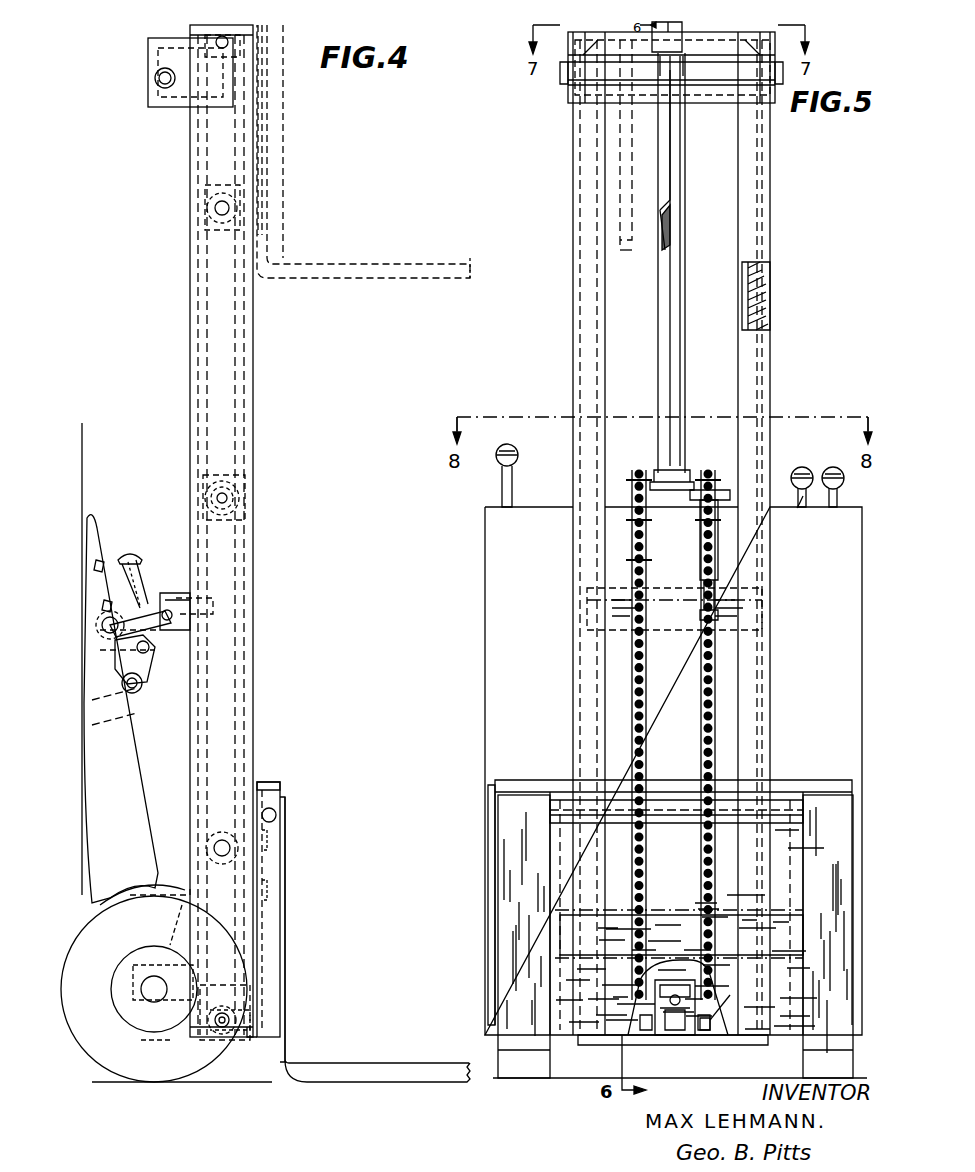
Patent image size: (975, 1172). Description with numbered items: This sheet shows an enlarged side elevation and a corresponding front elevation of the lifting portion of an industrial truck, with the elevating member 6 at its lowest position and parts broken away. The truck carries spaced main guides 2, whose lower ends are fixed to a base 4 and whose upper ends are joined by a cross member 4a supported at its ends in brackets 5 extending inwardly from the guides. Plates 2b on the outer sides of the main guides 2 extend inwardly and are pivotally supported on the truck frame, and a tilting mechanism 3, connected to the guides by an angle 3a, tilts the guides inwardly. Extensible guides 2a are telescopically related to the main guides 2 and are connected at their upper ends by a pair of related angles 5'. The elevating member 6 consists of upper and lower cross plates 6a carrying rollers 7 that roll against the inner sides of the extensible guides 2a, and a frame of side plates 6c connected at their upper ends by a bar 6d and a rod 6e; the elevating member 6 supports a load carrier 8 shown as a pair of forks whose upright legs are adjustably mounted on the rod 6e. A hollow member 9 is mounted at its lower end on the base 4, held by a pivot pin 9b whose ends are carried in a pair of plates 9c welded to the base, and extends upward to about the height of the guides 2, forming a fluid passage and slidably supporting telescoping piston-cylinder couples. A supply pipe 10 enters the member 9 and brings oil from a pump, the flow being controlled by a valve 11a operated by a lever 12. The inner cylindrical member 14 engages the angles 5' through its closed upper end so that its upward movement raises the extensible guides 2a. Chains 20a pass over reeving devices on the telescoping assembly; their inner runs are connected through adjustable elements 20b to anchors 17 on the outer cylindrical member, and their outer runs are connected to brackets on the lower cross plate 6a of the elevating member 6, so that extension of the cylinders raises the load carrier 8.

In FIG. 4, the main guides 2 is at (234, 690).
In FIG. 5, the main guides 2 is at (746, 188).
In FIG. 5, the extensible guides 2a is at (742, 297).
In FIG. 4, the plates 2b is at (185, 895).
In FIG. 5, the plates 2b is at (806, 930).
In FIG. 4, the tilting mechanism 3 is at (140, 660).
In FIG. 4, the angle 3a is at (172, 594).
In FIG. 5, the angle 3a is at (750, 649).
In FIG. 4, the base 4 is at (230, 1038).
In FIG. 5, the base 4 is at (596, 1042).
In FIG. 4, the cross member 4a is at (155, 78).
In FIG. 5, the cross member 4a is at (696, 70).
In FIG. 4, the brackets 5 is at (175, 85).
In FIG. 5, the angles 5' is at (671, 68).
In FIG. 4, the elevating member 6 is at (238, 892).
In FIG. 5, the cross plates 6a is at (560, 950).
In FIG. 4, the side plates 6c is at (280, 896).
In FIG. 5, the side plates 6c is at (488, 838).
In FIG. 4, the bar 6d is at (273, 782).
In FIG. 5, the bar 6d is at (529, 790).
In FIG. 4, the rod 6e is at (276, 815).
In FIG. 5, the rod 6e is at (785, 804).
In FIG. 4, the rollers 7 is at (224, 844).
In FIG. 4, the load carrier 8 is at (312, 1056).
In FIG. 5, the member 9 is at (672, 1035).
In FIG. 5, the pivot pin 9b is at (712, 1030).
In FIG. 5, the plates 9c is at (715, 1015).
In FIG. 4, the supply pipe 10 is at (154, 989).
In FIG. 5, the valve 11a is at (835, 498).
In FIG. 5, the lever 12 is at (800, 500).
In FIG. 5, the inner cylindrical member 14 is at (668, 190).
In FIG. 5, the anchors 17 is at (740, 579).
In FIG. 5, the flexible members 20a is at (630, 658).
In FIG. 5, the adjustable elements 20b is at (718, 614).